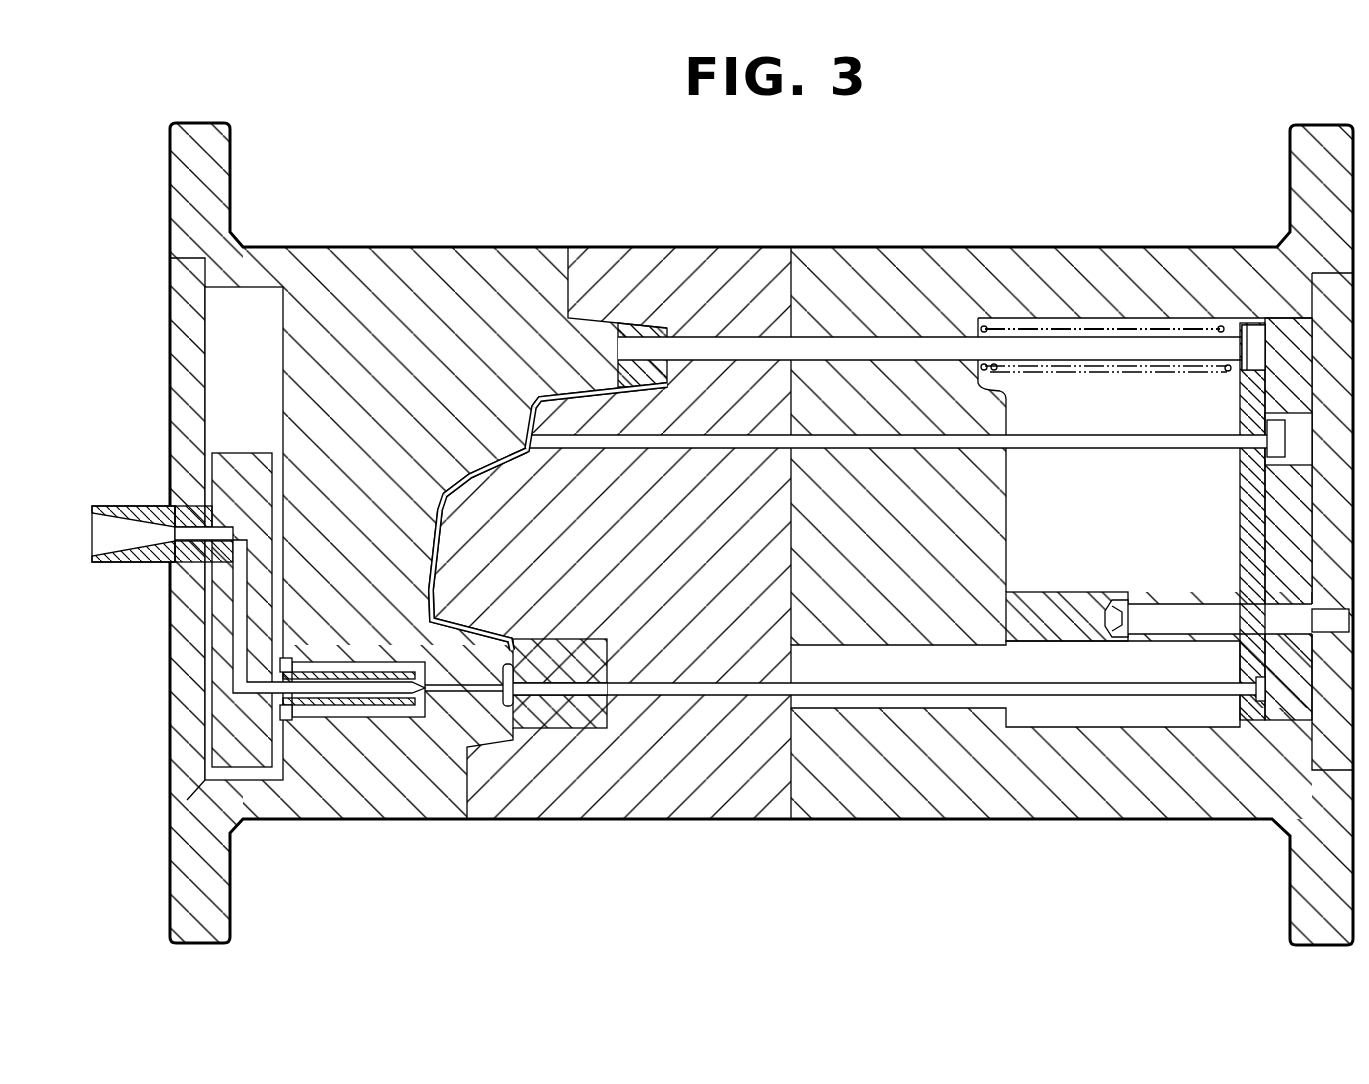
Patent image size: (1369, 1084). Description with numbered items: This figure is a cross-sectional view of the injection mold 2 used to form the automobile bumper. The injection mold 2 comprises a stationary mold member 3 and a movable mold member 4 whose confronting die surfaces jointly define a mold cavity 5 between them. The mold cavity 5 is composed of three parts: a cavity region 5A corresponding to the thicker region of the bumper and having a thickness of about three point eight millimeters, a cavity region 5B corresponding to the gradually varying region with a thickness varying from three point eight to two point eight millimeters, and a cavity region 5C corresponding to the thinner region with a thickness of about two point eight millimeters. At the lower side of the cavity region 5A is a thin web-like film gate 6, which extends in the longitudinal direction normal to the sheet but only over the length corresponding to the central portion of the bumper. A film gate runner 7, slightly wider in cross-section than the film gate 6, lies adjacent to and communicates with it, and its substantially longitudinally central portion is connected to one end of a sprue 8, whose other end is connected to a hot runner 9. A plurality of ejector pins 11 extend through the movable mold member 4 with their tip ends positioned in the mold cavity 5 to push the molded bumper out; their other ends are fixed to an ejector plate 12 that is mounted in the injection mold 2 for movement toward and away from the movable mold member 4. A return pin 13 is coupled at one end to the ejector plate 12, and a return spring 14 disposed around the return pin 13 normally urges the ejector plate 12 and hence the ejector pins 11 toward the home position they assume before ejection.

The injection mold 2 is at (1080, 236).
The stationary mold member 3 is at (362, 256).
The movable mold member 4 is at (706, 277).
The mold cavity 5 is at (522, 380).
The cavity region 5A is at (479, 580).
The cavity region 5B is at (492, 475).
The cavity region 5C is at (553, 392).
The film gate 6 is at (530, 640).
The film gate runner 7 is at (503, 668).
The sprue 8 is at (473, 684).
The hot runner 9 is at (243, 656).
The ejector pins 11 is at (759, 440).
The ejector plate 12 is at (1238, 480).
The return pin 13 is at (913, 345).
The return spring 14 is at (1117, 374).